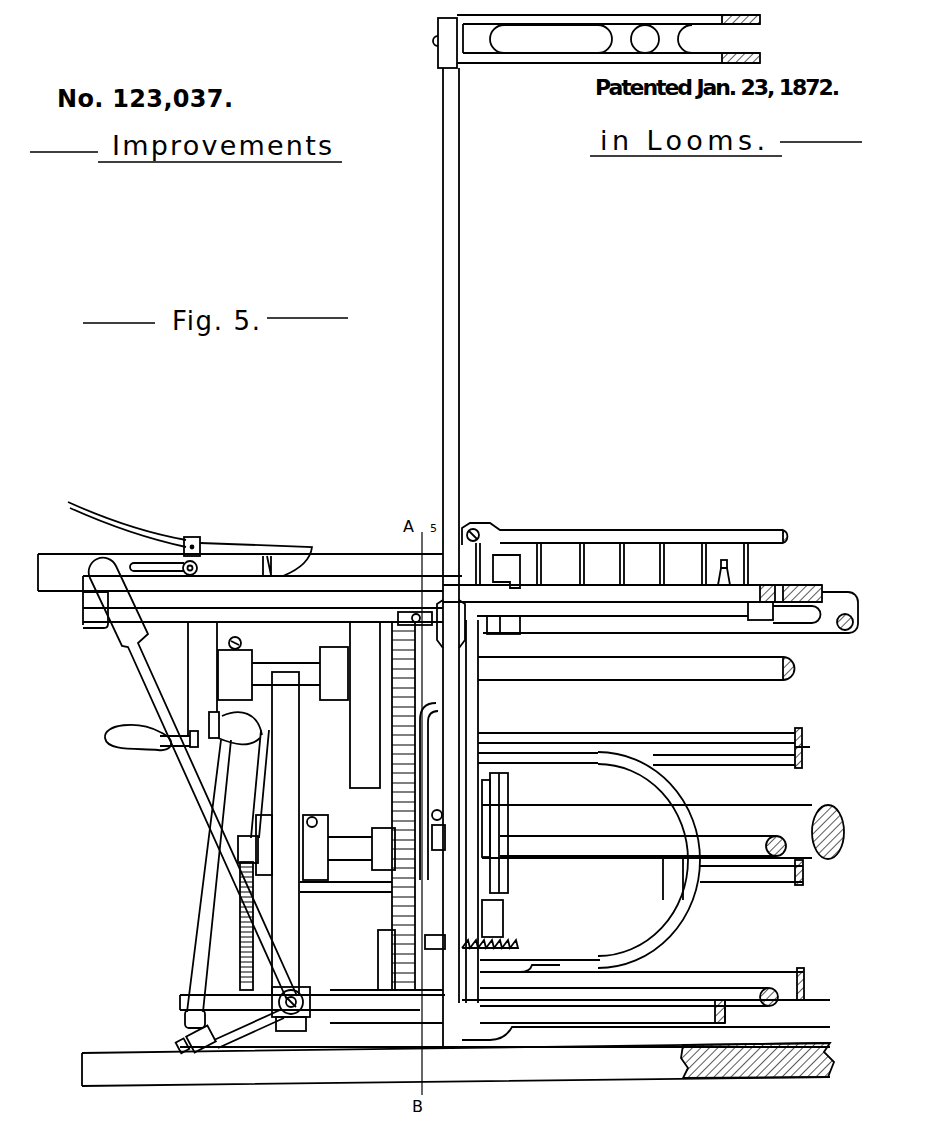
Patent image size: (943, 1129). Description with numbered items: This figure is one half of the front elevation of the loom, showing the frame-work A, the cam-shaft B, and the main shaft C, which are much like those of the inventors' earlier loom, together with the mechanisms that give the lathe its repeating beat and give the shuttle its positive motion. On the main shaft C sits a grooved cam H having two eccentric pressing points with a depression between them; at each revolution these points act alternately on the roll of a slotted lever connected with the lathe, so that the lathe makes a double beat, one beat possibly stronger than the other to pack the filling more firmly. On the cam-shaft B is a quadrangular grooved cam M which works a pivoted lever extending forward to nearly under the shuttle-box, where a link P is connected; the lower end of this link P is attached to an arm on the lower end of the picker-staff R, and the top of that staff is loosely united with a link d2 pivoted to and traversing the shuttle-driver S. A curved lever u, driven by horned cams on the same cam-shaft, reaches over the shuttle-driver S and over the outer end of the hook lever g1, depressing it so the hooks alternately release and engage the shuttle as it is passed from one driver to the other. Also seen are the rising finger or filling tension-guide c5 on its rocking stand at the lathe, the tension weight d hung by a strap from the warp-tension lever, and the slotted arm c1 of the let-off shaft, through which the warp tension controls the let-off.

The frame-work A is at (596, 531).
The cam-shaft B is at (557, 849).
The main shaft C is at (636, 668).
The grooved cam H is at (365, 705).
The quadrangular grooved cam M is at (285, 833).
The link P is at (226, 879).
The picker-staff R is at (199, 805).
The shuttle-driver S is at (256, 559).
The lever of the hook g1 is at (134, 529).
The link d2 is at (163, 566).
The rising finger or guide c5 is at (721, 569).
The curved lever u is at (183, 731).
The weight d is at (386, 960).
The slotted arm c1 is at (435, 940).